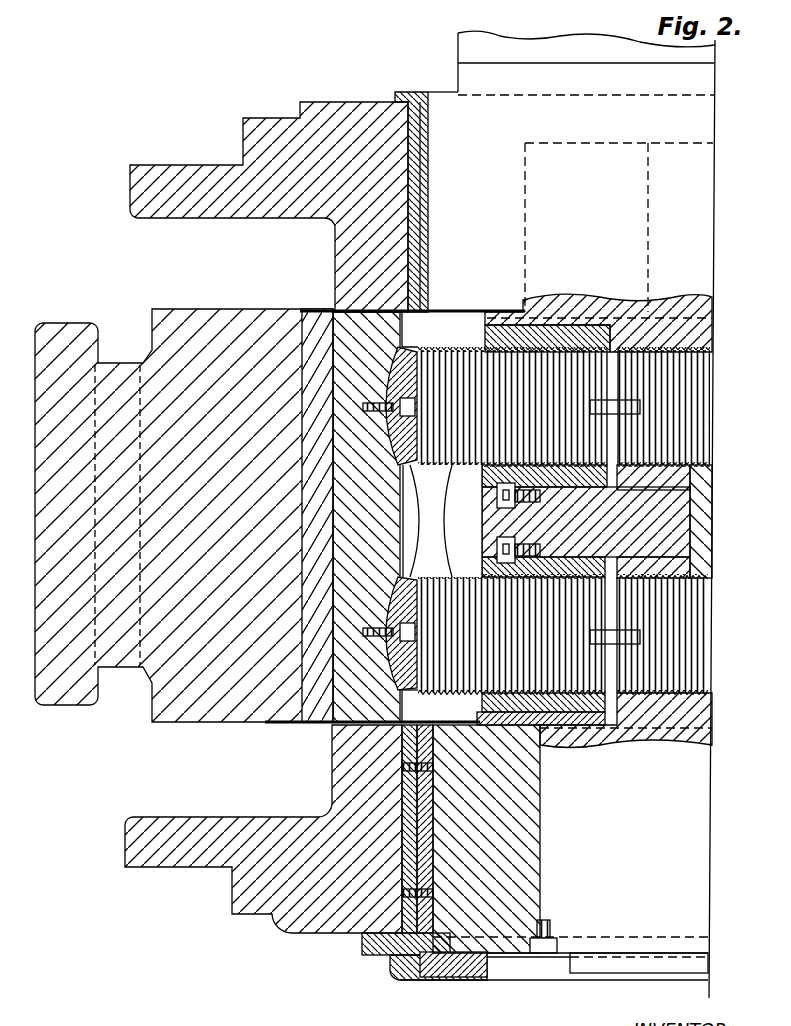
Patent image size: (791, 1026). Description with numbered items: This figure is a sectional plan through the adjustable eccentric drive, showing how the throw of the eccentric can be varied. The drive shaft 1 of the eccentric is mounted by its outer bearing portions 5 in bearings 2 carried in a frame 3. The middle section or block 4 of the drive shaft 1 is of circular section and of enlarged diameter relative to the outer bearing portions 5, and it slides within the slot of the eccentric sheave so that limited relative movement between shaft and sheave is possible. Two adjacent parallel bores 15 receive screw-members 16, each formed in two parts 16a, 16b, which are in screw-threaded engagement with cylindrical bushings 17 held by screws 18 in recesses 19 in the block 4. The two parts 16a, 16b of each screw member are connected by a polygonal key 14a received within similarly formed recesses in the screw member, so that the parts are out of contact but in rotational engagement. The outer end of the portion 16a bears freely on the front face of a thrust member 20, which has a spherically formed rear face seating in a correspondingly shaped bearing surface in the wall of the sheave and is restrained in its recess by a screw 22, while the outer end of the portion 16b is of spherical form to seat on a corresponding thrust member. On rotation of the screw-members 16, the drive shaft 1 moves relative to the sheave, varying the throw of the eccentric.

The drive shaft 1 is at (557, 514).
The bearings 2 is at (420, 112).
The frame 3 is at (272, 133).
The middle section or block 4 is at (518, 518).
The outer bearing portions 5 is at (619, 471).
The polygonal key 14a is at (630, 330).
The parallel bores 15 is at (660, 330).
The screw-members 16 is at (447, 521).
The screw member portion 16a is at (487, 350).
The screw member portion 16b is at (703, 330).
The cylindrical bushings 17 is at (497, 325).
The screws 18 is at (500, 493).
The recesses 19 is at (590, 322).
The thrust member 20 is at (442, 521).
The screw 22 is at (425, 347).